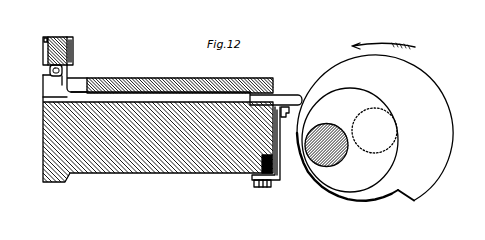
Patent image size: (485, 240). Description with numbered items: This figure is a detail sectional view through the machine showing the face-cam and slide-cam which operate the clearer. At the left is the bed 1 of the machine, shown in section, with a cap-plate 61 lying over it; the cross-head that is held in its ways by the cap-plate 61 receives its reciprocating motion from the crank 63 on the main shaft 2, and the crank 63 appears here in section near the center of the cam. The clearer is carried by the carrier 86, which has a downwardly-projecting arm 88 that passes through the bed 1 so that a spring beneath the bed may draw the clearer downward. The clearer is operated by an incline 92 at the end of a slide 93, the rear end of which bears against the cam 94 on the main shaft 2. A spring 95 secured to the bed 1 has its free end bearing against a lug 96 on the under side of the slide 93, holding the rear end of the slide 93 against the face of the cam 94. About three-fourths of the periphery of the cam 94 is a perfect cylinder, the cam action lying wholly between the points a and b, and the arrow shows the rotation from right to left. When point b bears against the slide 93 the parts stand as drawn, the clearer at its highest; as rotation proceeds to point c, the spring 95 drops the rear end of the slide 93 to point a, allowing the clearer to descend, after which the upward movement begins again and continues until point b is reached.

The bed 1 is at (43, 141).
The main shaft 2 is at (374, 130).
The cap-plate 61 is at (153, 78).
The crank 63 is at (339, 160).
The carrier 86 is at (74, 45).
The downwardly-projecting arm 88 is at (50, 71).
The incline 92 is at (61, 70).
The slide 93 is at (186, 98).
The cam 94 is at (373, 133).
The spring 95 is at (279, 155).
The lug 96 is at (285, 117).
The cam-surface point a is at (394, 196).
The cam-surface point b is at (306, 182).
The cam-surface point c is at (412, 202).